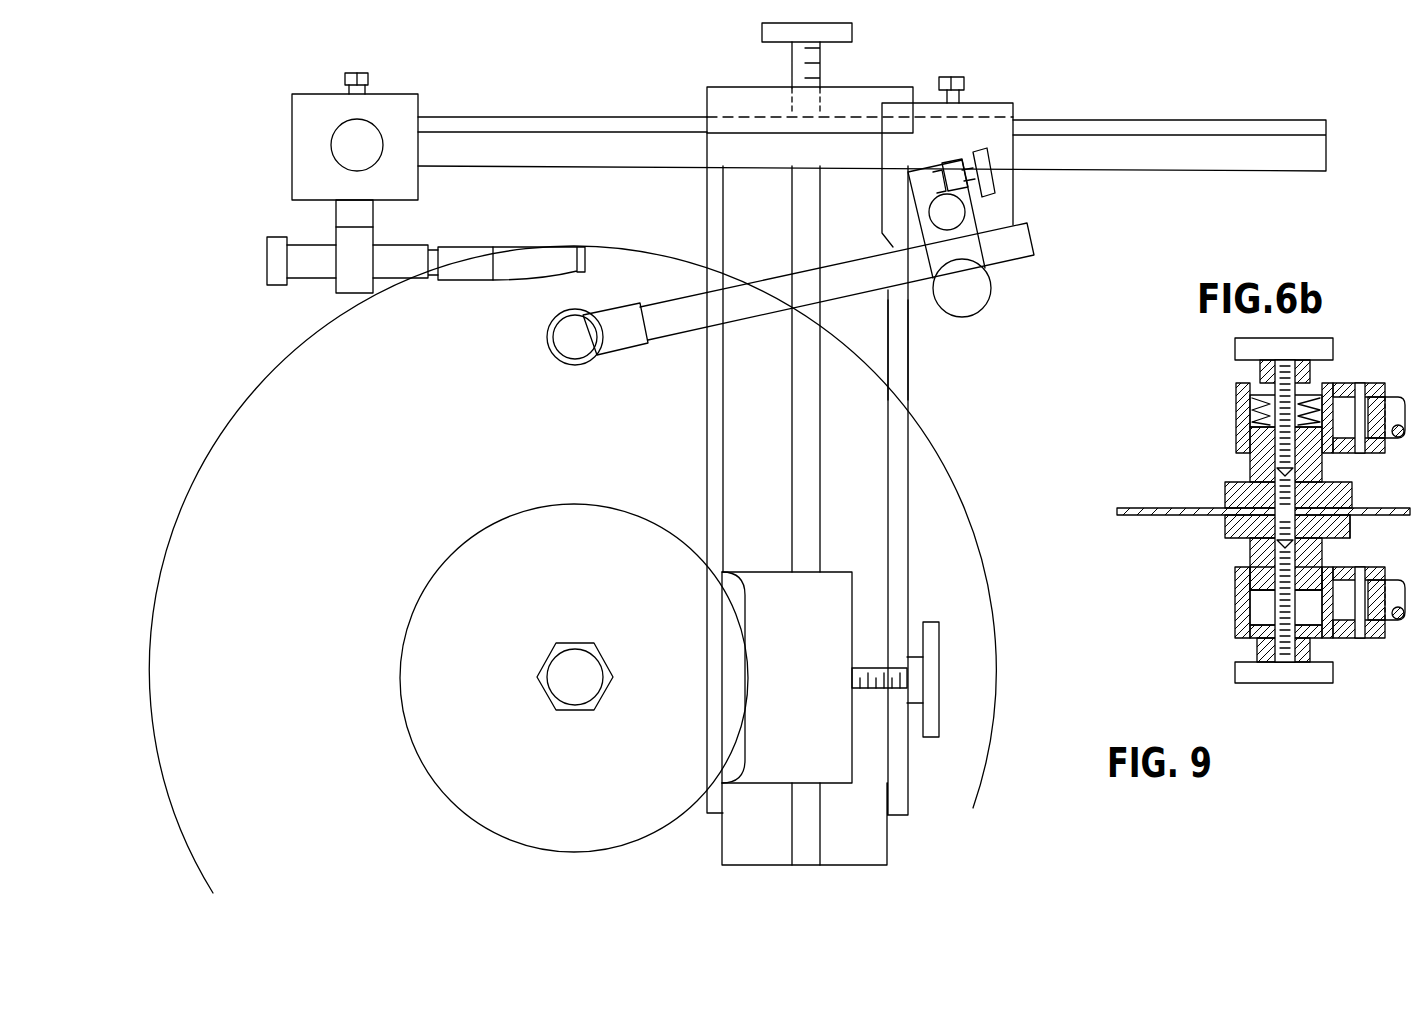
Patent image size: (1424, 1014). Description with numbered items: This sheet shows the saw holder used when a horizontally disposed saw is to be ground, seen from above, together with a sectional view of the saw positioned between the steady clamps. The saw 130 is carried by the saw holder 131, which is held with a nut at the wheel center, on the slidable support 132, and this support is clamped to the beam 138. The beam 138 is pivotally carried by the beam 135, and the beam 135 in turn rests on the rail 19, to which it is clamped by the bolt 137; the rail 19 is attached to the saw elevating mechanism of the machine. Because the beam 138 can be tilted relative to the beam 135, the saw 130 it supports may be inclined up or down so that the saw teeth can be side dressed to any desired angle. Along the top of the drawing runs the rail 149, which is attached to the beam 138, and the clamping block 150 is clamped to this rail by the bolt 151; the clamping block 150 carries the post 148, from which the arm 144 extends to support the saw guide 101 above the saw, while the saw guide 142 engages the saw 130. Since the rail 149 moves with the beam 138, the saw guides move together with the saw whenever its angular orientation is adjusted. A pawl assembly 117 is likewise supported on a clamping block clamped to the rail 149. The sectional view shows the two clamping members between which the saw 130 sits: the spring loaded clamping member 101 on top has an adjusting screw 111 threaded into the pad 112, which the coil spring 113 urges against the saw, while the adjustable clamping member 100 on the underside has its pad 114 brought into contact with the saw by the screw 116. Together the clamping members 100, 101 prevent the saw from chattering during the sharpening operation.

In FIG. 9, the rail 19 is at (582, 115).
In FIG. 6B, the adjustable clamping member 100 is at (1226, 620).
In FIG. 6B, the spring loaded clamping member 101 is at (1220, 399).
In FIG. 6B, the adjusting screw 111 is at (1330, 350).
In FIG. 6B, the pad 112 is at (1233, 485).
In FIG. 6B, the coil spring 113 is at (1254, 410).
In FIG. 6B, the pad 114 is at (1350, 530).
In FIG. 6B, the screw 116 is at (1333, 672).
In FIG. 9, the pawl assembly 117 is at (418, 239).
In FIG. 9, the saw 130 is at (997, 657).
In FIG. 6B, the saw 130 is at (1160, 507).
In FIG. 9, the saw holder 131 is at (582, 693).
In FIG. 9, the slidable support 132 is at (845, 620).
In FIG. 9, the beam 135 is at (908, 400).
In FIG. 9, the bolt 137 is at (852, 30).
In FIG. 9, the beam 138 is at (820, 541).
In FIG. 9, the saw guide 142 is at (578, 357).
In FIG. 9, the arm 144 is at (680, 320).
In FIG. 9, the post 148 is at (960, 213).
In FIG. 9, the rail 149 is at (1199, 148).
In FIG. 9, the clamping block 150 is at (1005, 120).
In FIG. 9, the bolt 151 is at (964, 84).